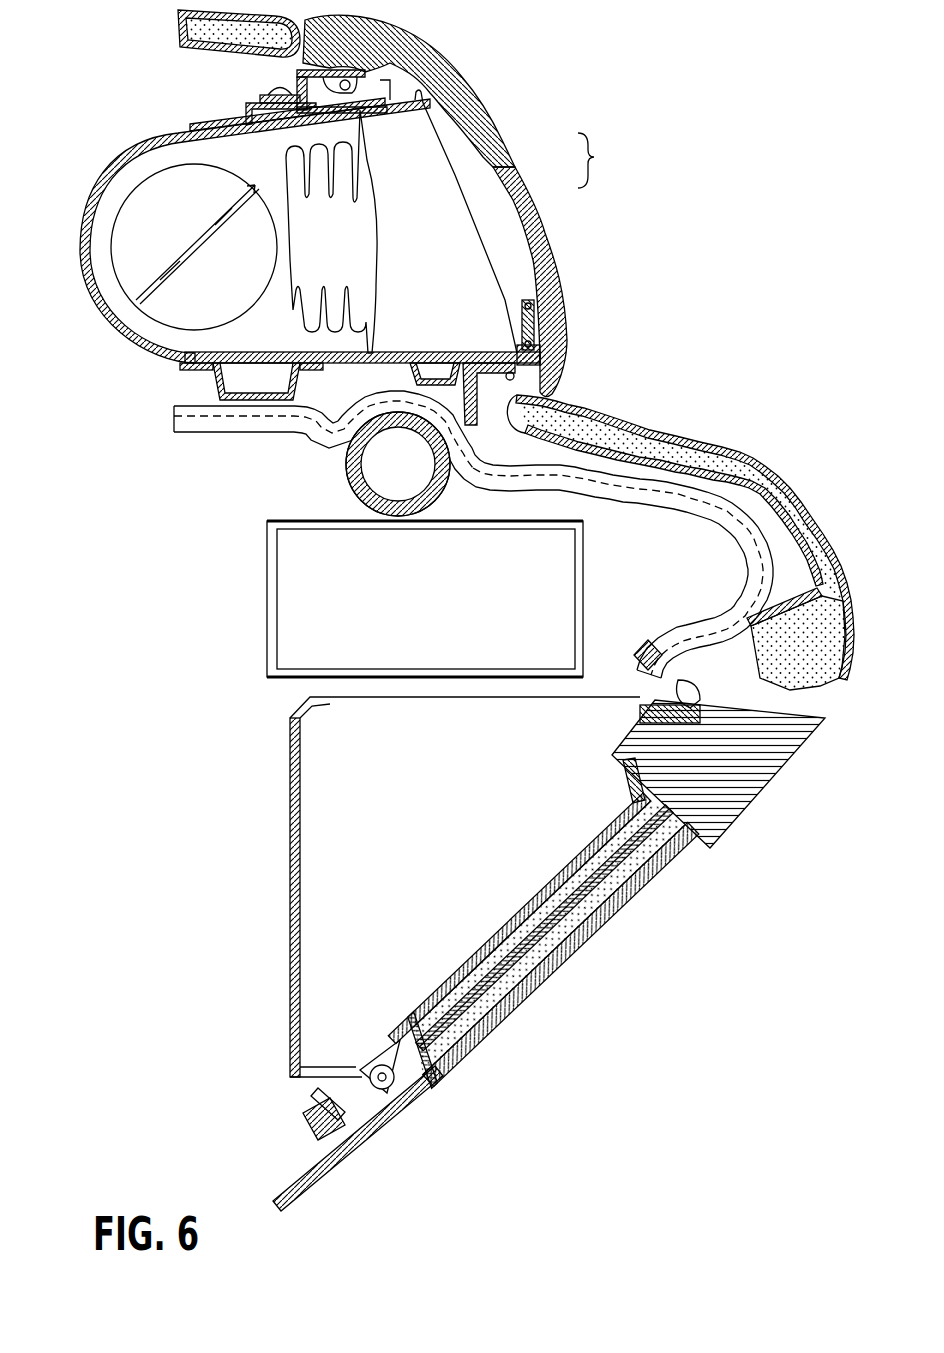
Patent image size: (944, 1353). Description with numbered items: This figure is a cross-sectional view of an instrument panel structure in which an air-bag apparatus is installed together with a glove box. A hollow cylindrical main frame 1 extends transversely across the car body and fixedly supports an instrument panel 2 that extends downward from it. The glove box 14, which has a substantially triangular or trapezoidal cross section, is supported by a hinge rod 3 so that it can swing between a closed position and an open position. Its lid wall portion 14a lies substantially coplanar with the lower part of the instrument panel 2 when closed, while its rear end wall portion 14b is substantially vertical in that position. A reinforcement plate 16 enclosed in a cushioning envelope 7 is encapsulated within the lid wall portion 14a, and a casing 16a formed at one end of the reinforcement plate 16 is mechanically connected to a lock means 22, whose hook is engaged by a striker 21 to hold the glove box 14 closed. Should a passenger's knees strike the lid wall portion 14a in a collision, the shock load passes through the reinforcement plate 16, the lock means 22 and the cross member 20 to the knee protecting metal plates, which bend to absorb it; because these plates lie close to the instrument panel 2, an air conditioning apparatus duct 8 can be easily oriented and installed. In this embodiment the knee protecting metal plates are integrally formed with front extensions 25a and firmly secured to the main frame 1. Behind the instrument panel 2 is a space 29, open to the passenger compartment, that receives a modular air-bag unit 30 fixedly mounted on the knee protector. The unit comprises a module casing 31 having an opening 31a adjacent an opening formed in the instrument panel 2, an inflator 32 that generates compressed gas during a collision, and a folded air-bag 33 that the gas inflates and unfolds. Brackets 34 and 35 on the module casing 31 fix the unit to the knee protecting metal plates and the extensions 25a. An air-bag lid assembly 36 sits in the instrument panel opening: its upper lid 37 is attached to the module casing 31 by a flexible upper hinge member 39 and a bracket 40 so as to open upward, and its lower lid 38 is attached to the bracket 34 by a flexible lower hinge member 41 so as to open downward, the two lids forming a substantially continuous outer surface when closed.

The main frame 1 is at (352, 492).
The instrument panel 2 is at (796, 486).
The hinge rod 3 is at (395, 1080).
The cushioning envelope 7 is at (645, 880).
The air conditioning apparatus duct 8 is at (437, 620).
The glove box 14 is at (392, 783).
The lid wall portion 14a is at (610, 927).
The rear end wall portion 14b is at (293, 808).
The reinforcement plate 16 is at (540, 958).
The casing 16a is at (633, 788).
The cross member 20 is at (633, 700).
The striker 21 is at (640, 716).
The lock means 22 is at (782, 773).
The front extensions 25a is at (227, 422).
The space 29 is at (197, 105).
The modular air-bag unit 30 is at (72, 177).
The module casing 31 is at (118, 320).
The opening 31a is at (500, 254).
The inflator 32 is at (247, 187).
The air-bag 33 is at (290, 312).
The bracket 34 is at (470, 383).
The bracket 35 is at (212, 380).
The air-bag lid assembly 36 is at (642, 175).
The upper lid 37 is at (522, 145).
The lower lid 38 is at (530, 190).
The flexible upper hinge member 39 is at (327, 82).
The bracket 40 is at (243, 100).
The flexible lower hinge member 41 is at (522, 332).